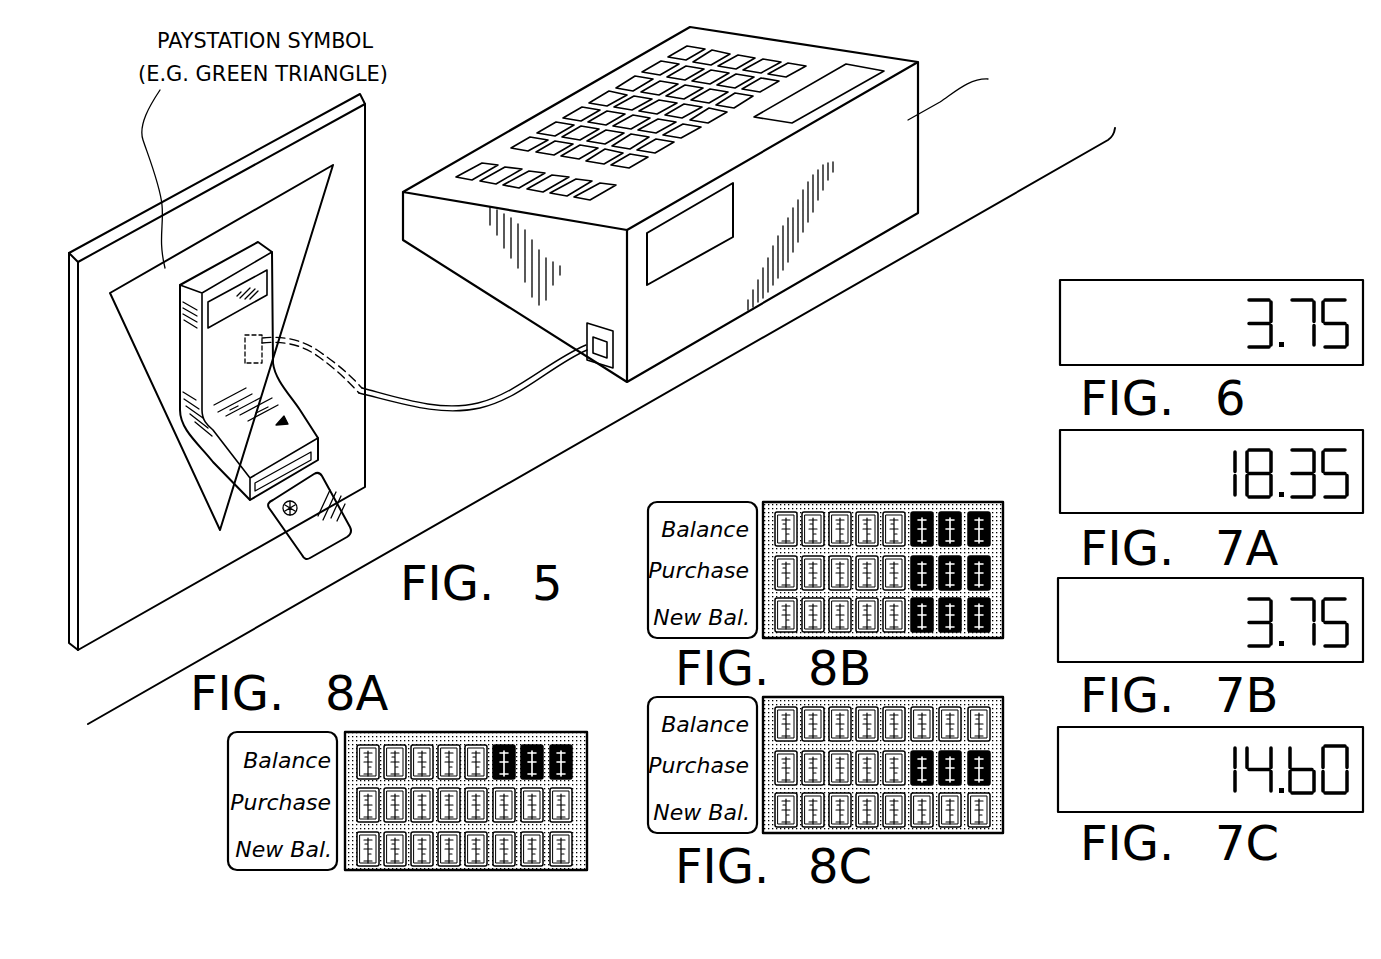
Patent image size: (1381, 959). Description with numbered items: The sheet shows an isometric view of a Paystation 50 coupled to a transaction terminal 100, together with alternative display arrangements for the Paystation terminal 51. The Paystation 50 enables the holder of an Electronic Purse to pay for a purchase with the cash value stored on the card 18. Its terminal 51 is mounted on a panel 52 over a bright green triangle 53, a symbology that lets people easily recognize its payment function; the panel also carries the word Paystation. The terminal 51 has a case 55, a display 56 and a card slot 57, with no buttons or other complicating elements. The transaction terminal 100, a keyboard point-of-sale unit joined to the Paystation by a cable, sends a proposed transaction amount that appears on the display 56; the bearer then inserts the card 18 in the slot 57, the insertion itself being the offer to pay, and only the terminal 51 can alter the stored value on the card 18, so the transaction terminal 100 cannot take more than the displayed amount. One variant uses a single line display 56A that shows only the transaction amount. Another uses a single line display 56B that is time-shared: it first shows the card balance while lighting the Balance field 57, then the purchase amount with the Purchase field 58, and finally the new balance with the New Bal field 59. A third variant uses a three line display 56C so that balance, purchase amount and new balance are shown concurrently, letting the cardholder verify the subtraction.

In FIG. 5, the card 18 is at (332, 523).
In FIG. 5, the Paystation 50 is at (416, 378).
In FIG. 5, the terminal 51 is at (283, 422).
In FIG. 5, the paystation panel 52 is at (345, 264).
In FIG. 5, the green triangle 53 is at (313, 190).
In FIG. 5, the case 55 is at (258, 316).
In FIG. 5, the display 56 is at (253, 280).
In FIG. 6, the single line display 56A is at (1292, 289).
In FIG. 7A, the single line display 56B is at (1337, 440).
In FIG. 7B, the single line display 56B is at (1300, 590).
In FIG. 7C, the single line display 56B is at (1298, 740).
In FIG. 8A, the three line display 56C is at (465, 740).
In FIG. 8B, the three line display 56C is at (878, 508).
In FIG. 8C, the three line display 56C is at (940, 700).
In FIG. 5, the card slot 57 is at (312, 458).
In FIG. 7A, the card slot 57 is at (1070, 440).
In FIG. 7B, the purchase indicator 58 is at (1072, 600).
In FIG. 7C, the new balance indicator 59 is at (1072, 803).
In FIG. 5, the transaction terminal 100 is at (985, 177).